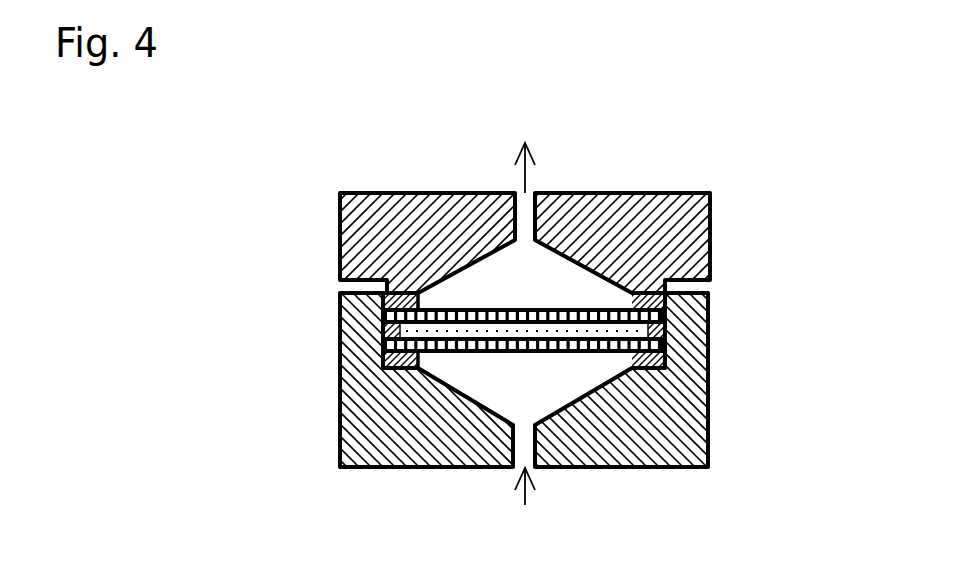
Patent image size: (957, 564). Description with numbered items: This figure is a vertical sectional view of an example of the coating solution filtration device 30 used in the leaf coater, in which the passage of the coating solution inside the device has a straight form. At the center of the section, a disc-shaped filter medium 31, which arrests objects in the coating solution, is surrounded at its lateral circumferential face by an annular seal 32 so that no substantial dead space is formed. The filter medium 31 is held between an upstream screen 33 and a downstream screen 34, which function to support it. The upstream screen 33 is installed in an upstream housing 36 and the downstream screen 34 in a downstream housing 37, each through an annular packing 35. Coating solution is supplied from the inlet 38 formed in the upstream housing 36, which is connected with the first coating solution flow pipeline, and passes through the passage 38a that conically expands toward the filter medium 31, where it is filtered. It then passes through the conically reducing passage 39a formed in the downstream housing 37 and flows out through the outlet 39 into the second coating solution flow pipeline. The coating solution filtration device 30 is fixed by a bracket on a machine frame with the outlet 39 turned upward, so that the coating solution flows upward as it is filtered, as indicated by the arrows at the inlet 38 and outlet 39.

The coating solution filtration device 30 is at (340, 235).
The filter medium 31 is at (570, 350).
The annular seal 32 is at (660, 340).
The upstream screen 33 is at (475, 355).
The downstream screen 34 is at (466, 310).
The annular packing 35 is at (655, 302).
The upstream housing 36 is at (358, 410).
The downstream housing 37 is at (357, 266).
The inlet 38 is at (517, 470).
The passage 38a is at (532, 380).
The outlet 39 is at (525, 190).
The conically reducing passage 39a is at (490, 280).